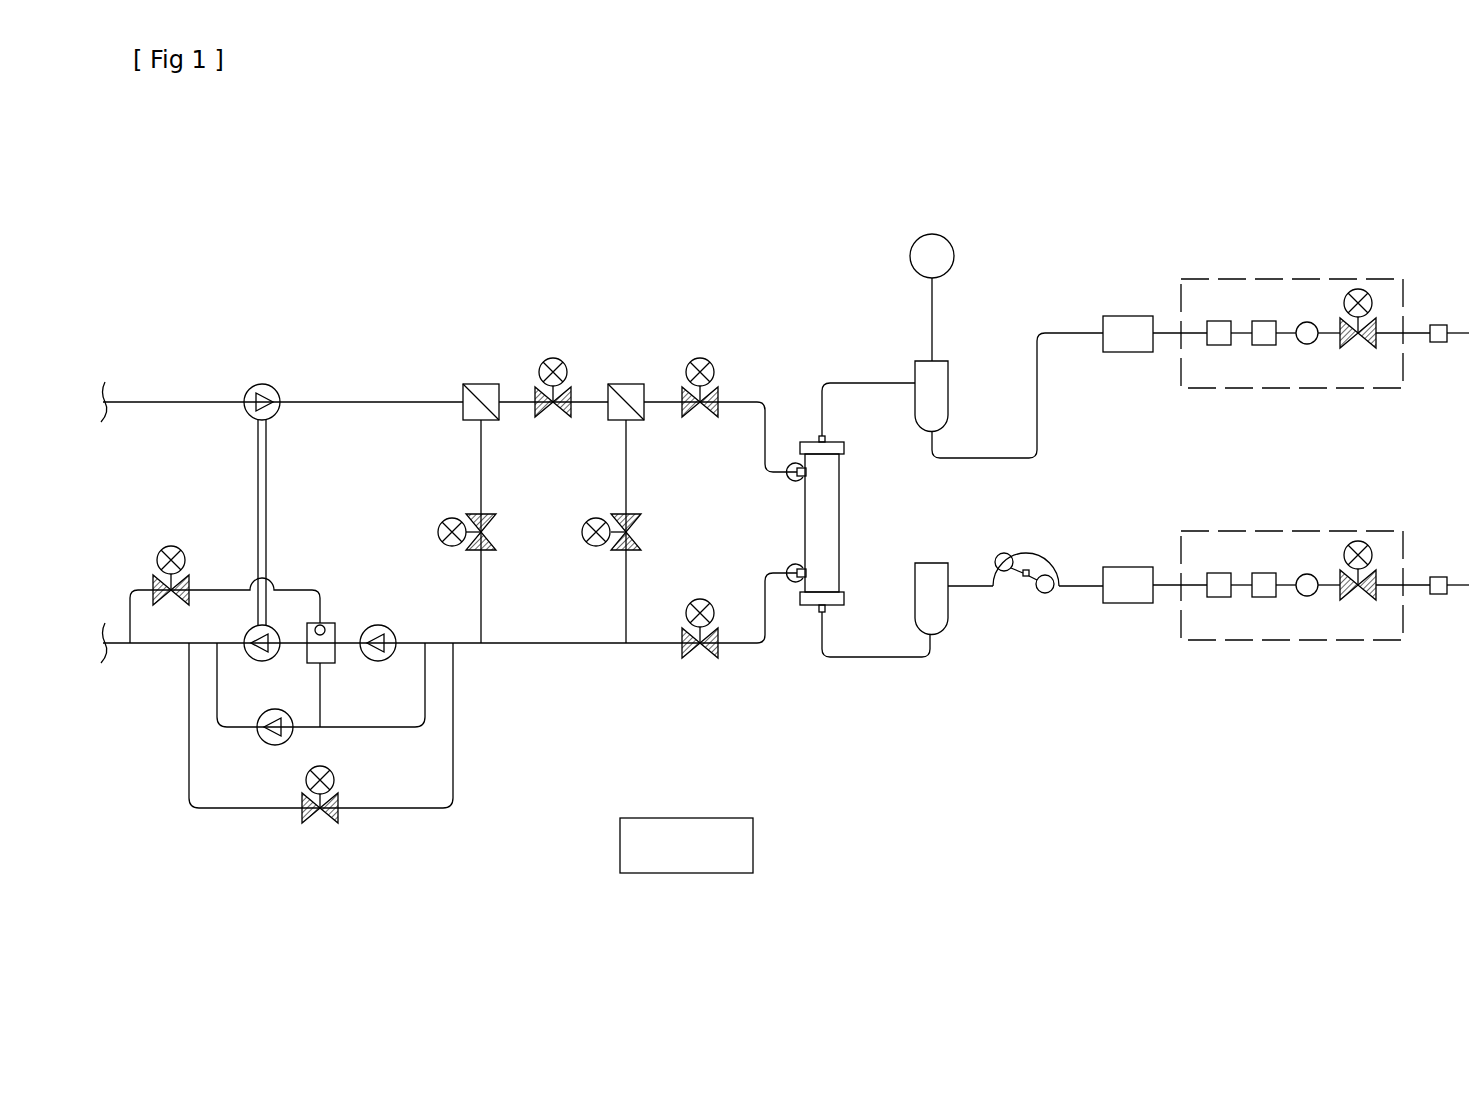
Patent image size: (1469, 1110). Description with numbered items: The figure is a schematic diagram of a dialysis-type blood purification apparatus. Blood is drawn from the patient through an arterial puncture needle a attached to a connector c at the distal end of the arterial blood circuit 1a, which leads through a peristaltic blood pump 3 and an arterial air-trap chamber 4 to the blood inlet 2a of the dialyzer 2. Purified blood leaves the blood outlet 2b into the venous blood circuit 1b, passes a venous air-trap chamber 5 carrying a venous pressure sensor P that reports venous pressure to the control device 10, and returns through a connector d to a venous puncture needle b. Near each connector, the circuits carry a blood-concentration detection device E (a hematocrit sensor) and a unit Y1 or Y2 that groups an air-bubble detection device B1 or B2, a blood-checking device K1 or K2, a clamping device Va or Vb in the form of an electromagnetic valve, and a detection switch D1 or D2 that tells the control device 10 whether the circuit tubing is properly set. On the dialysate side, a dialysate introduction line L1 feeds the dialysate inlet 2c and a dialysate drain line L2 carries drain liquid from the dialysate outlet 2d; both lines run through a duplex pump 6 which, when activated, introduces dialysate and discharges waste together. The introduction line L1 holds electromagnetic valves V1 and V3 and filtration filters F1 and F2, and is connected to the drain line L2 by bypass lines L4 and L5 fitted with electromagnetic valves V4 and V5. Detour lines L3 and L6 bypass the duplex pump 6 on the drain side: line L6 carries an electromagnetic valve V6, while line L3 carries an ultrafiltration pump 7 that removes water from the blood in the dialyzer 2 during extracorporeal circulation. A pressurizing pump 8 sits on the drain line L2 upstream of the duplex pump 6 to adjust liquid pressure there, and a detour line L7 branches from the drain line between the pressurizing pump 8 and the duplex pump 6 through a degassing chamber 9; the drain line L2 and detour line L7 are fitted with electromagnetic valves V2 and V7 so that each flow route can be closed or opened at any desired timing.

The arterial blood circuit 1a is at (868, 660).
The venous blood circuit 1b is at (870, 383).
The dialyzer 2 is at (845, 525).
The blood inlet 2a is at (828, 610).
The blood outlet 2b is at (835, 441).
The dialysate inlet 2c is at (786, 478).
The dialysate outlet 2d is at (790, 565).
The blood pump 3 is at (1054, 523).
The arterial air-trap chamber 4 is at (950, 606).
The venous air-trap chamber 5 is at (948, 388).
The duplex pump 6 is at (245, 470).
The ultrafiltration pump 7 is at (262, 742).
The pressurizing pump 8 is at (370, 625).
The degassing chamber 9 is at (335, 660).
The control device 10 is at (753, 840).
The venous pressure sensor P is at (932, 297).
The dialysate introduction line L1 is at (341, 400).
The dialysate drain line L2 is at (575, 645).
The detour line L3 is at (405, 728).
The bypass line L4 is at (481, 445).
The bypass line L5 is at (626, 445).
The detour line L6 is at (428, 810).
The detour line L7 is at (292, 590).
The electromagnetic valve V1 is at (700, 357).
The electromagnetic valve V2 is at (700, 598).
The electromagnetic valve V3 is at (553, 357).
The electromagnetic valve V4 is at (440, 524).
The electromagnetic valve V5 is at (584, 524).
The electromagnetic valve V6 is at (325, 823).
The electromagnetic valve V7 is at (170, 545).
The clamping device Va is at (1356, 541).
The clamping device Vb is at (1356, 289).
The filtration filter F1 is at (478, 383).
The filtration filter F2 is at (624, 383).
The blood-concentration detection device E is at (1130, 315).
The air-bubble detection device B1 is at (1215, 572).
The air-bubble detection device B2 is at (1215, 320).
The blood-checking device K1 is at (1263, 572).
The blood-checking device K2 is at (1263, 320).
The detection switch D1 is at (1307, 573).
The detection switch D2 is at (1307, 321).
The unit Y1 is at (1222, 640).
The unit Y2 is at (1395, 279).
The arterial puncture needle a is at (1456, 584).
The venous puncture needle b is at (1456, 332).
The connector c is at (1440, 596).
The connector d is at (1440, 344).